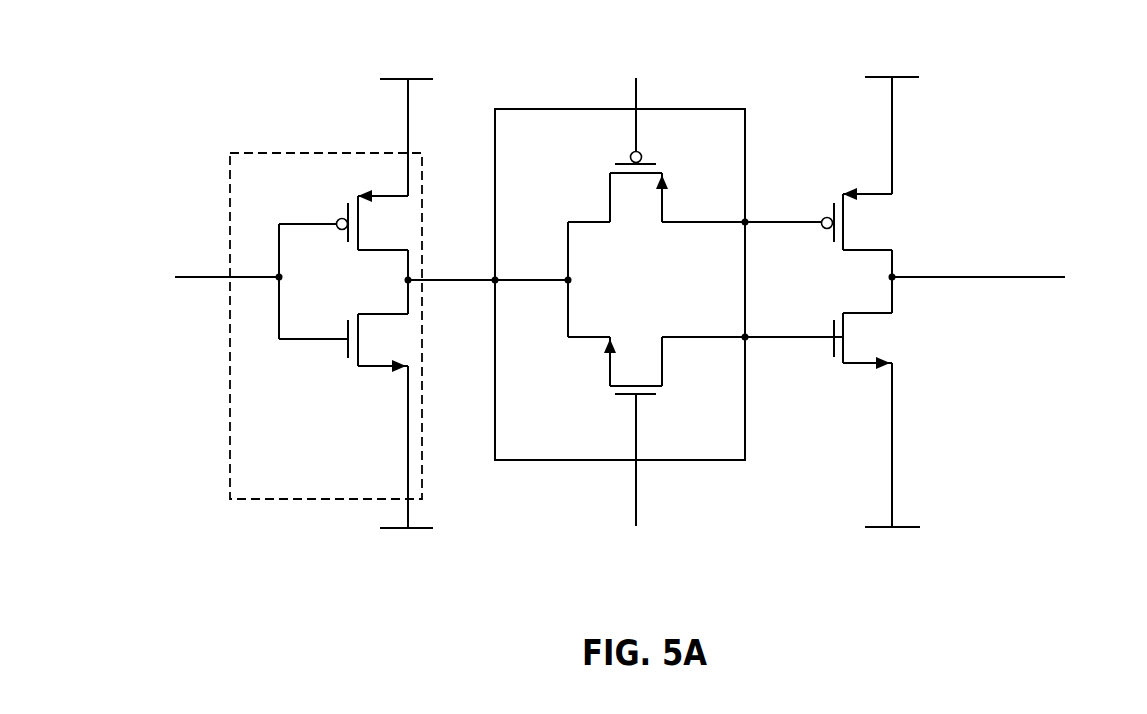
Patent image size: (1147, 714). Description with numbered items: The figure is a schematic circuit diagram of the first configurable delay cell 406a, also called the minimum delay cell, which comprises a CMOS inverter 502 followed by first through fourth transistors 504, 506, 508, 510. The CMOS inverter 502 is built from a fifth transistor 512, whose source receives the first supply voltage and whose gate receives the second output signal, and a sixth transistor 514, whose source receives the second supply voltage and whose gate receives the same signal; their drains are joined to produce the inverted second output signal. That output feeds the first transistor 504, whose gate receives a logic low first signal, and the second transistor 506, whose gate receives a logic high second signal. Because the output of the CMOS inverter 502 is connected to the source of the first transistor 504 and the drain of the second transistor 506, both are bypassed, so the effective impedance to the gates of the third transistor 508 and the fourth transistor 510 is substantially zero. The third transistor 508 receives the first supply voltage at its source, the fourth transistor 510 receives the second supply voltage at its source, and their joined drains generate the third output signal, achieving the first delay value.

The first configurable delay cell 406a is at (175, 43).
The CMOS inverter 502 is at (330, 153).
The first transistor 504 is at (610, 195).
The second transistor 506 is at (609, 364).
The third transistor 508 is at (852, 251).
The fourth transistor 510 is at (852, 366).
The fifth transistor 512 is at (372, 251).
The sixth transistor 514 is at (378, 367).